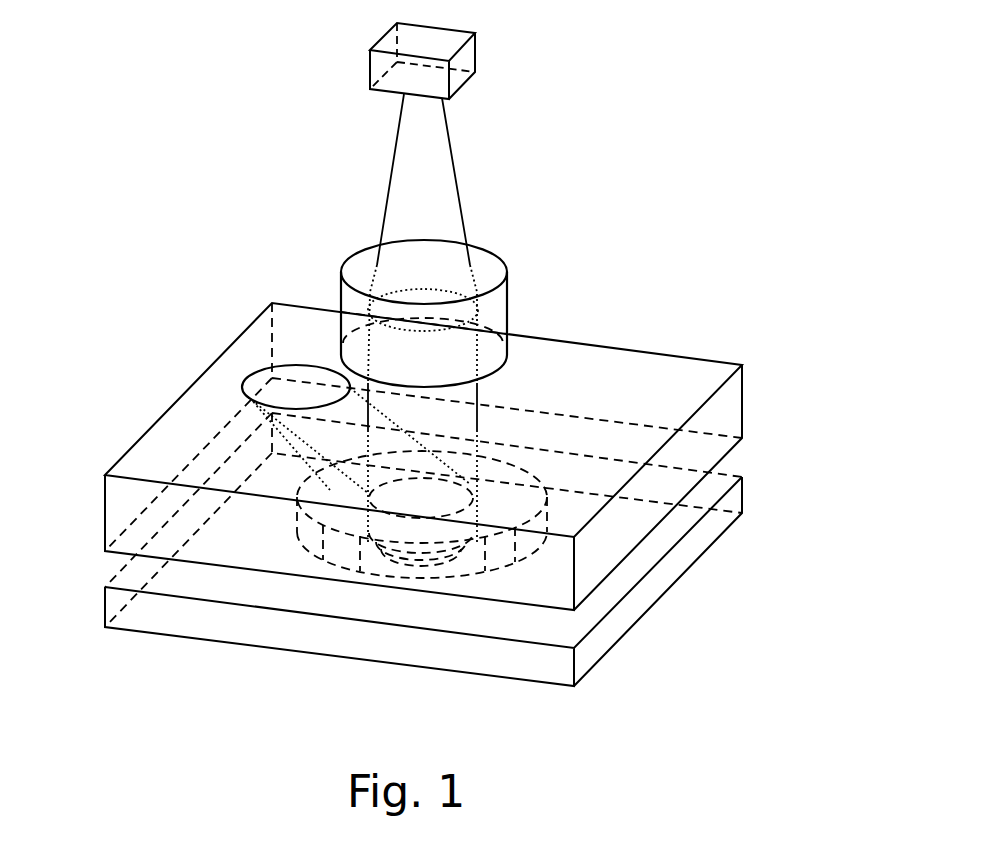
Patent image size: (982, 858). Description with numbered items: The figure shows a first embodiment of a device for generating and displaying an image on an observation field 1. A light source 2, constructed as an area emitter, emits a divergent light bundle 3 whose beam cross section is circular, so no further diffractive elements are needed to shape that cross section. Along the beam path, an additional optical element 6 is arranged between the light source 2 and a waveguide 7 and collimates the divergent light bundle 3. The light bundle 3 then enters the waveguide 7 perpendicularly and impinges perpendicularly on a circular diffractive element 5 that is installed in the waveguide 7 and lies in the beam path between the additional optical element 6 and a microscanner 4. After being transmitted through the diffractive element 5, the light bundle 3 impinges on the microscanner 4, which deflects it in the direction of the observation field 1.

The observation field 1 is at (242, 385).
The light source 2 is at (477, 55).
The light bundle 3 is at (455, 173).
The microscanner 4 is at (742, 487).
The diffractive element 5 is at (547, 508).
The additional optical element 6 is at (508, 293).
The waveguide 7 is at (742, 402).